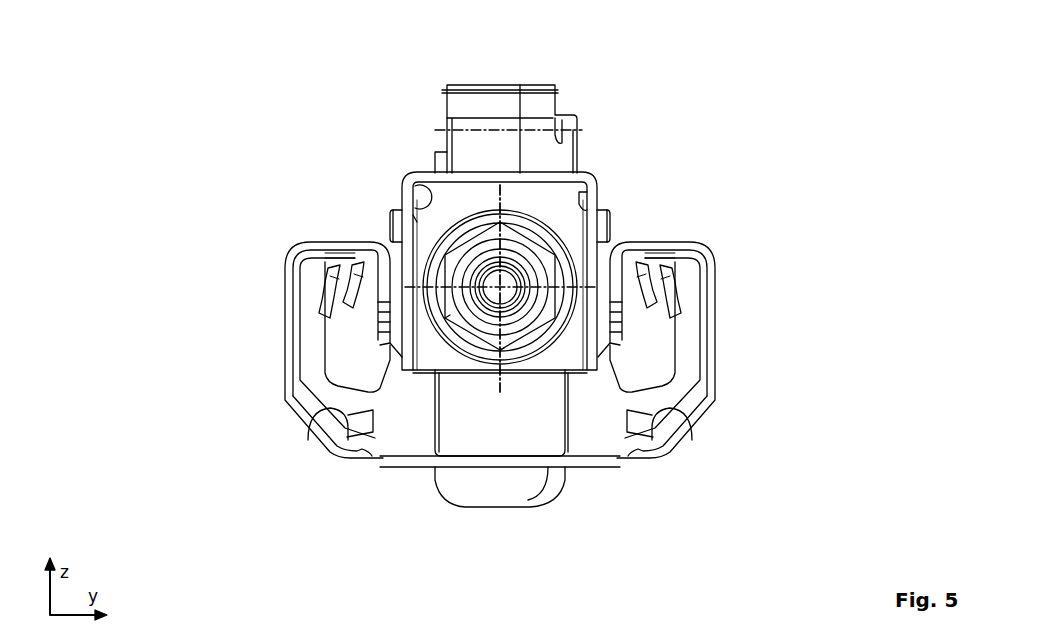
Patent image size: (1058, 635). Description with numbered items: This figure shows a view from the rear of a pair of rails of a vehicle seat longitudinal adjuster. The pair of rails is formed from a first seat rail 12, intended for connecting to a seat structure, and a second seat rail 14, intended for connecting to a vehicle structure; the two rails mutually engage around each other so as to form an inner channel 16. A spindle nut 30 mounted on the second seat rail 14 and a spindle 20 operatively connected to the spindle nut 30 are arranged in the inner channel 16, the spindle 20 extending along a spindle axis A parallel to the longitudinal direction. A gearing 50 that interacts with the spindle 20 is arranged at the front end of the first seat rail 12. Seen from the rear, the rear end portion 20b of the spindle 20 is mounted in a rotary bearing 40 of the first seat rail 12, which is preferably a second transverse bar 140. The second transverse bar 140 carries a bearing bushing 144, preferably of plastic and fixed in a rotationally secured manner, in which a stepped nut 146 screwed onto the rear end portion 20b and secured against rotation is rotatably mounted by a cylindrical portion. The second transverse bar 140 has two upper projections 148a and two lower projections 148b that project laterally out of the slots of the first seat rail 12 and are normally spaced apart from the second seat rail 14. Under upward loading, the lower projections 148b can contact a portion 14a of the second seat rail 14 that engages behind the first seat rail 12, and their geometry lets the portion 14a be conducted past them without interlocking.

The first seat rail 12 is at (586, 178).
The second seat rail 14 is at (472, 462).
The portion of the second seat rail 14a is at (380, 320).
The inner channel 16 is at (595, 430).
The spindle 20 is at (488, 282).
The rear end portion of the spindle 20b is at (488, 282).
The spindle nut 30 is at (527, 437).
The rotary bearing 40 is at (466, 196).
The gearing 50 is at (477, 130).
The second transverse bar 140 is at (437, 213).
The bearing bushing 144 is at (466, 336).
The stepped nut 146 is at (490, 345).
The upper projections 148a is at (390, 222).
The lower projections 148b is at (388, 357).
The spindle axis A is at (500, 287).